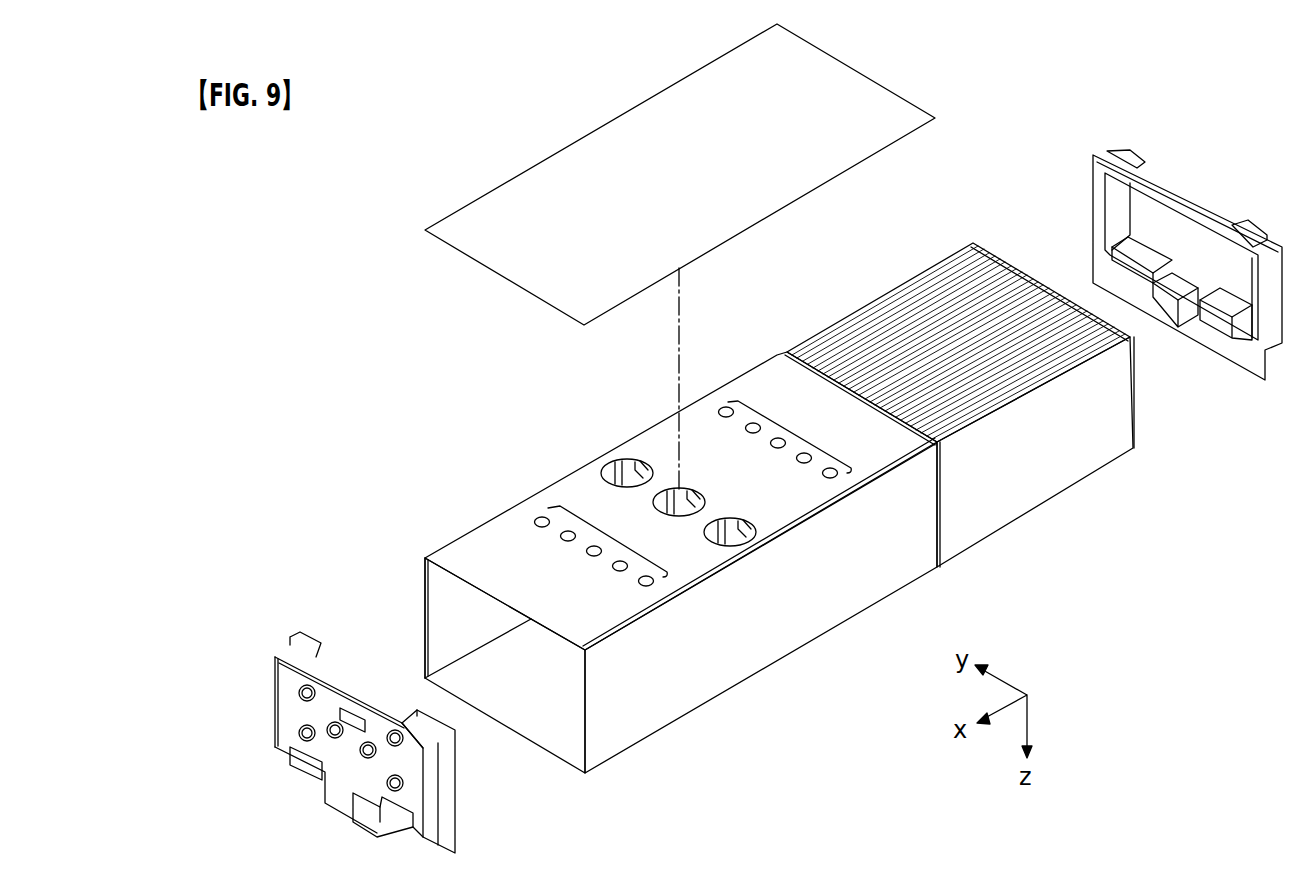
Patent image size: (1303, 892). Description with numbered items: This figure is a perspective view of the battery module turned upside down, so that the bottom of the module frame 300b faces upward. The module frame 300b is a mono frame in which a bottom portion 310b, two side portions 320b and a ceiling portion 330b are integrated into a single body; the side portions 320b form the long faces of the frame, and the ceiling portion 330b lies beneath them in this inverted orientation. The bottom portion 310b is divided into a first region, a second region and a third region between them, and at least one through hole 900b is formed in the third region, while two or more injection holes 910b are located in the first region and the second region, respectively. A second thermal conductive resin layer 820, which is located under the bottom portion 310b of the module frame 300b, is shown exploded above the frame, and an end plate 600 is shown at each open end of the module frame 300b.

The second thermal conductive resin layer 820 is at (490, 213).
The end plate 600 is at (283, 712).
The module frame 300b is at (735, 539).
The bottom portion 310b is at (668, 473).
The side portions 320b is at (447, 602).
The ceiling portion 330b is at (548, 728).
The through hole 900b is at (627, 459).
The injection holes 910b is at (620, 537).